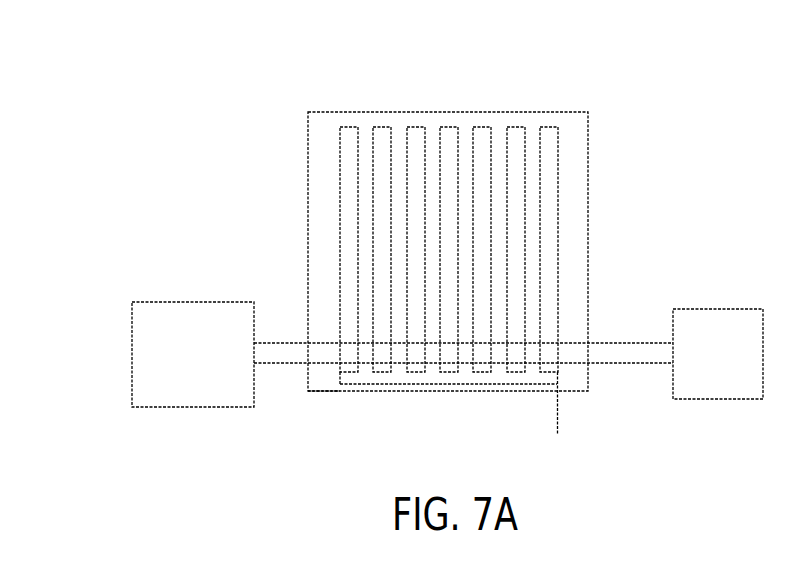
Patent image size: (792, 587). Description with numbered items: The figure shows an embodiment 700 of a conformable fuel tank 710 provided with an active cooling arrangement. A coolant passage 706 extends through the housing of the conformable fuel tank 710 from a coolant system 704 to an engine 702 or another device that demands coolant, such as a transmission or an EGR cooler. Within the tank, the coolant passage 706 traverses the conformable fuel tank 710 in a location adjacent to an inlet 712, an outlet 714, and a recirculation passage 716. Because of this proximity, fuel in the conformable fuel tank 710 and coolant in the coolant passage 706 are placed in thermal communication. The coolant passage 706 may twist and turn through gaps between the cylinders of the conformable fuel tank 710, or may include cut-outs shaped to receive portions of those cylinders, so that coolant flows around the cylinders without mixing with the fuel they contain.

The embodiment 700 is at (686, 80).
The engine 702 is at (172, 366).
The coolant system 704 is at (699, 366).
The coolant passage 706 is at (604, 343).
The conformable fuel tank 710 is at (333, 112).
The inlet 712 is at (583, 391).
The outlet 714 is at (332, 389).
The recirculation passage 716 is at (457, 384).